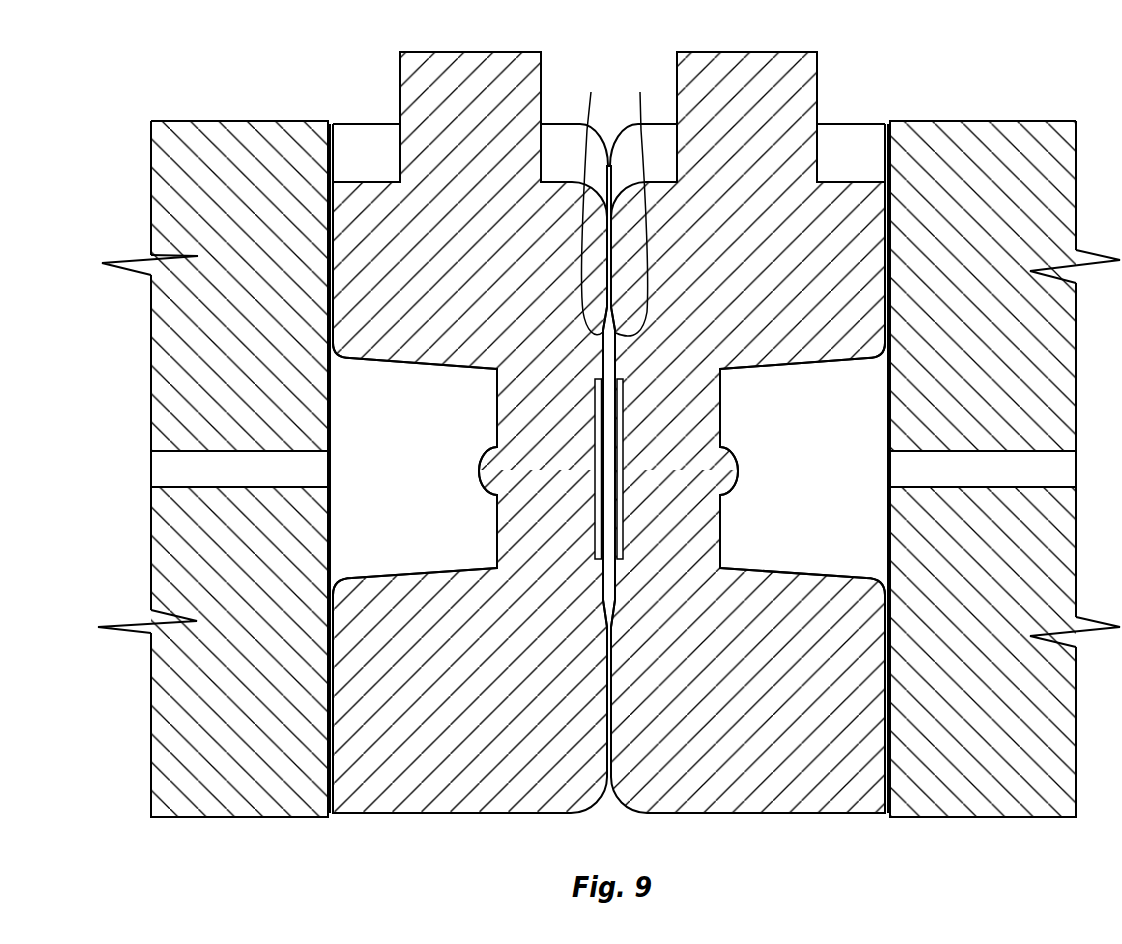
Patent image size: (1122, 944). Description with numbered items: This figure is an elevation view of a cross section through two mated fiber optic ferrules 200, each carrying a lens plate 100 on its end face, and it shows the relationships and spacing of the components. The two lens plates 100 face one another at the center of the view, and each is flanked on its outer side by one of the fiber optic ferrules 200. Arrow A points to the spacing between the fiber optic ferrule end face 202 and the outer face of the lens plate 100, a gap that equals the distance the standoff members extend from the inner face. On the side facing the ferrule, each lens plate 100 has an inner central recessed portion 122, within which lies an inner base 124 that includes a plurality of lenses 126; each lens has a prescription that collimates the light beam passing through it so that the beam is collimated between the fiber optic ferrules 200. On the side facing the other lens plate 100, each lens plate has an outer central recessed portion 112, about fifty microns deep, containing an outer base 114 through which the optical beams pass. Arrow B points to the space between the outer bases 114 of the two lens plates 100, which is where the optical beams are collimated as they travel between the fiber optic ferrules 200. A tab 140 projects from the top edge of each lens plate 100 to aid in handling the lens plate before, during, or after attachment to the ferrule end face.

The lens plate 100 is at (484, 815).
The outer central recessed portion 112 is at (615, 201).
The outer base 114 is at (597, 392).
The inner central recessed portion 122 is at (341, 453).
The inner base 124 is at (497, 526).
The plurality of lenses 126 is at (480, 462).
The tab 140 is at (452, 52).
The fiber optic ferrule 200 is at (220, 819).
The fiber optic ferrule end face 202 is at (330, 526).
The arrow A is at (330, 118).
The arrow B is at (612, 407).